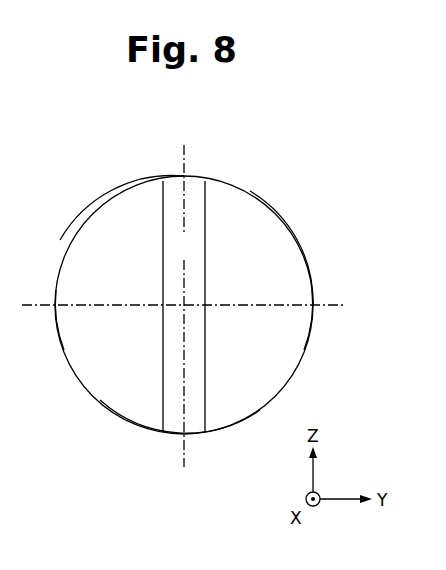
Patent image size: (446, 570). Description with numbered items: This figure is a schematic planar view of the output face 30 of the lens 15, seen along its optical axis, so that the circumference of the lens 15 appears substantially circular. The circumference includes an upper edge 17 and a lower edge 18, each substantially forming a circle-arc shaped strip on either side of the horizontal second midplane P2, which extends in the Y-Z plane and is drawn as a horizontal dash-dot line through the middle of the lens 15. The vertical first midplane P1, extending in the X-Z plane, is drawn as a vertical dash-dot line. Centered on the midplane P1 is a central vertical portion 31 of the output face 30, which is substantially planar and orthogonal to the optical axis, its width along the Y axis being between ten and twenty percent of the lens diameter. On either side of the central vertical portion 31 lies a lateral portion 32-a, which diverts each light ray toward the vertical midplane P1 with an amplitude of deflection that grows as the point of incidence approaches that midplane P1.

The lens 15 is at (93, 167).
The upper edge 17 is at (130, 183).
The lower edge 18 is at (125, 425).
The output face 30 is at (280, 216).
The central vertical portion 31 is at (198, 256).
The lateral portion 32-a is at (143, 273).
The vertical first midplane P1 is at (185, 147).
The horizontal second midplane P2 is at (330, 302).